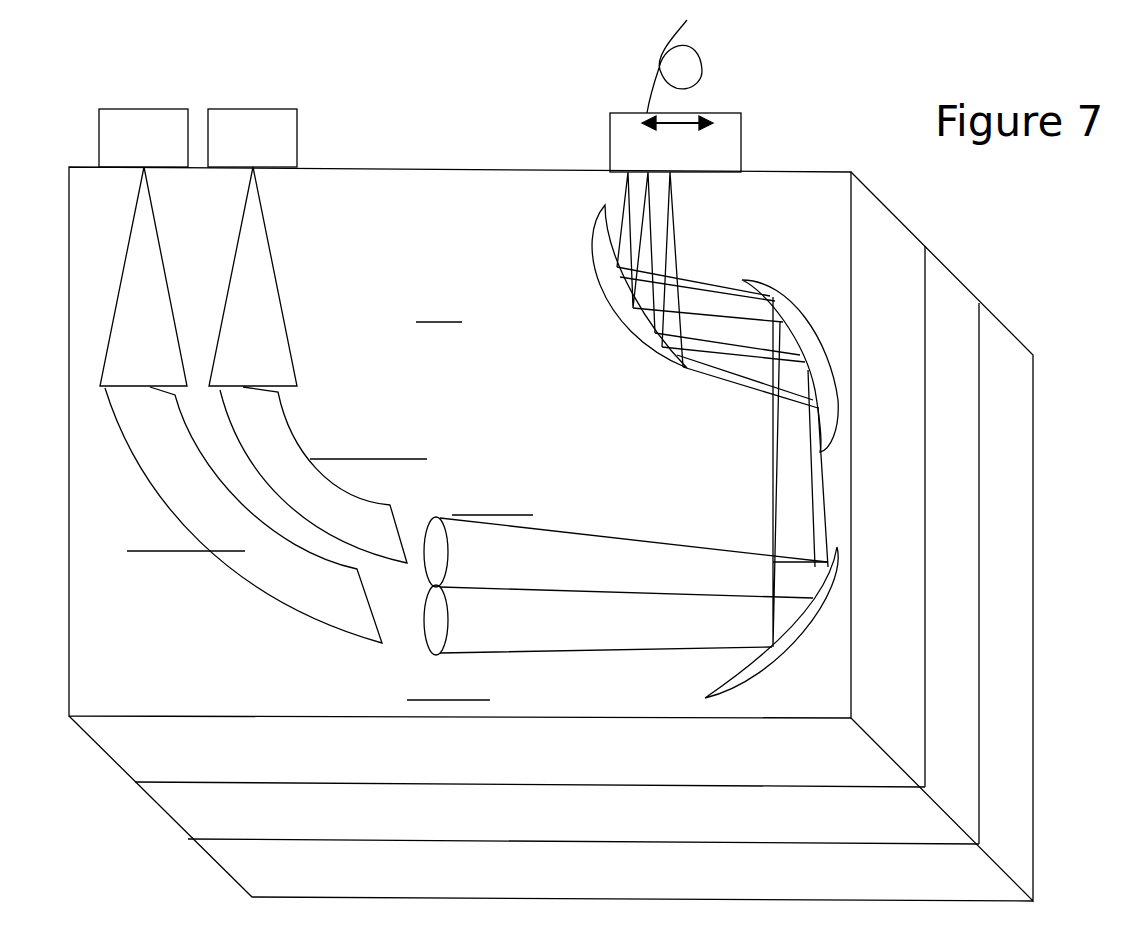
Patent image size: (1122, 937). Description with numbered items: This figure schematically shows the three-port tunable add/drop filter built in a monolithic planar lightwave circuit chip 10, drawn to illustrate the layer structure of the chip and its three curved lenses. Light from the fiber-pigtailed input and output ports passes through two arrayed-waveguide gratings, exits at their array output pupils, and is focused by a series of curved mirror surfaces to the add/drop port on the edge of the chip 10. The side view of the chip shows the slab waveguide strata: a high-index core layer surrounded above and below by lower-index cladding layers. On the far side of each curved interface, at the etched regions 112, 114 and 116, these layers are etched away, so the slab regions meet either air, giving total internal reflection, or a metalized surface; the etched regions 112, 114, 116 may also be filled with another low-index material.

The monolithic PLC 10 is at (551, 460).
The etched region 112 is at (778, 665).
The etched region 114 is at (808, 338).
The etched region 116 is at (608, 282).